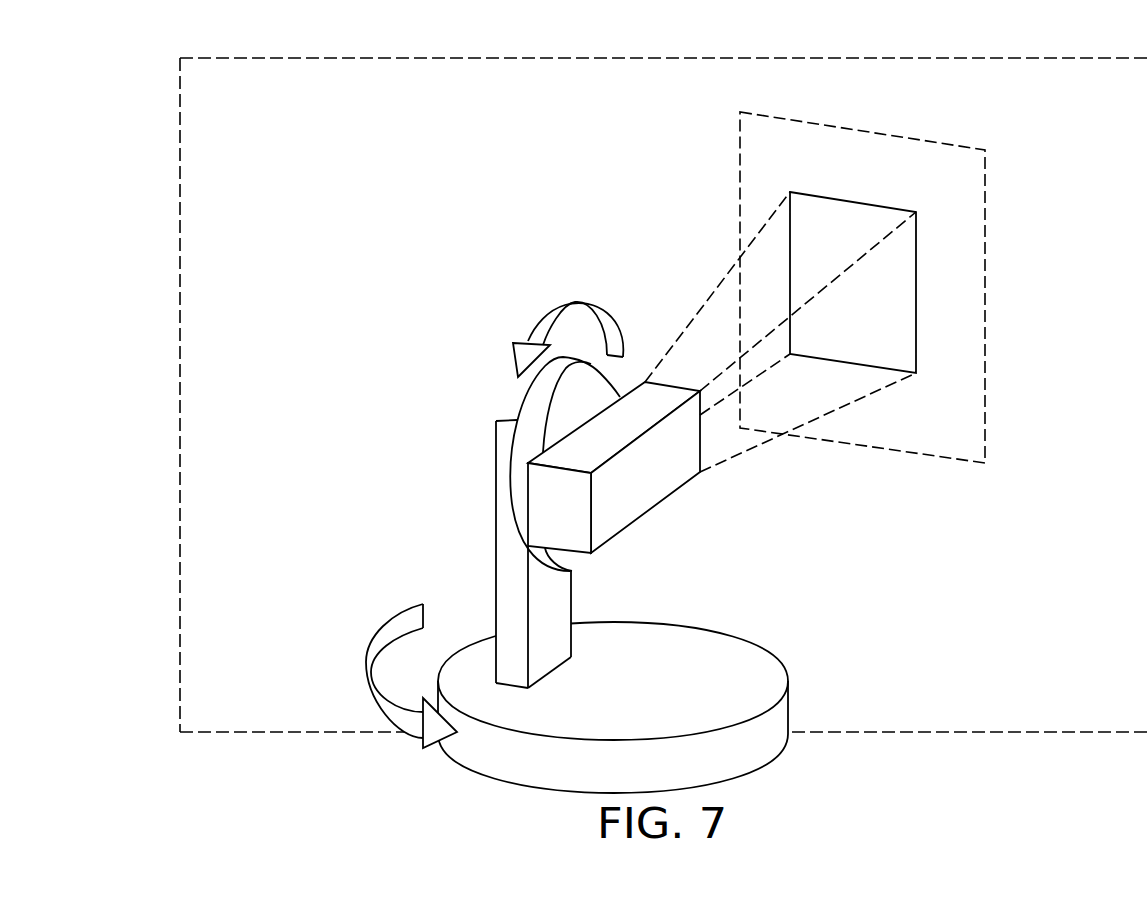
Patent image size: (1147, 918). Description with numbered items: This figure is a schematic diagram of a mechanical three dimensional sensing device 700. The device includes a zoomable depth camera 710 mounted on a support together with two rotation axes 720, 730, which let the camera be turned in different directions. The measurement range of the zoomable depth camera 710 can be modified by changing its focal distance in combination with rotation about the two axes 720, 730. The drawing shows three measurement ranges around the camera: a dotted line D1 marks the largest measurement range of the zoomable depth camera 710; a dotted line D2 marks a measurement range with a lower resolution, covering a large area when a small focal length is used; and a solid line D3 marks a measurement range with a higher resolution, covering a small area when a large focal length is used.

The mechanical three dimensional sensing device 700 is at (1138, 779).
The zoomable depth camera 710 is at (652, 497).
The rotation axis 720 is at (538, 390).
The rotation axis 730 is at (783, 712).
The dotted line D1 is at (222, 56).
The dotted line D2 is at (963, 145).
The solid line D3 is at (917, 318).